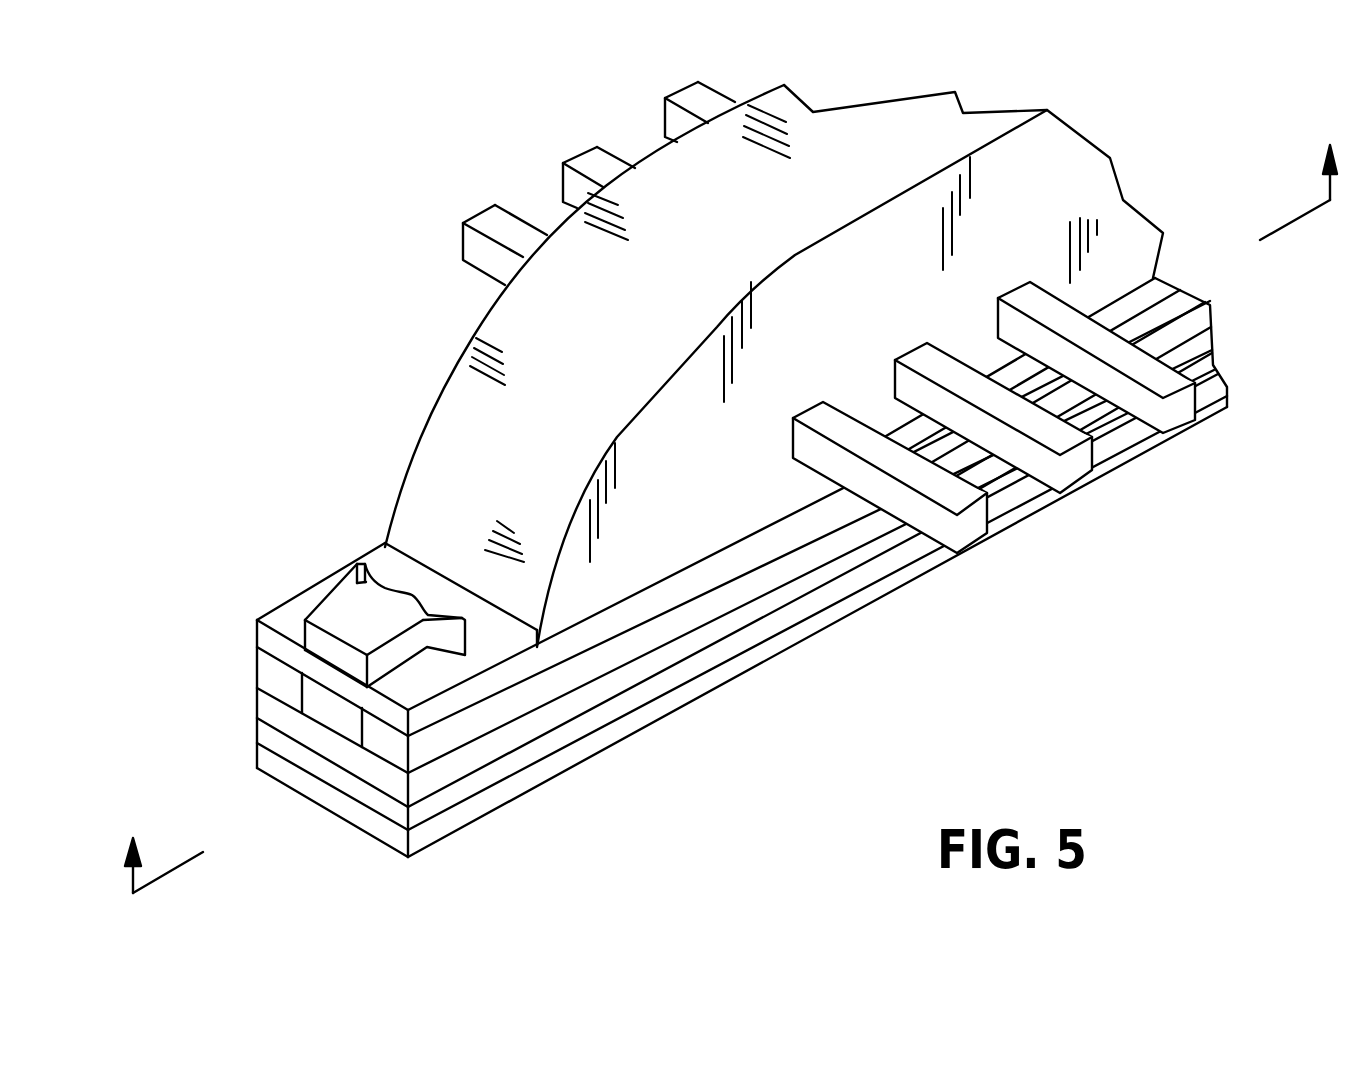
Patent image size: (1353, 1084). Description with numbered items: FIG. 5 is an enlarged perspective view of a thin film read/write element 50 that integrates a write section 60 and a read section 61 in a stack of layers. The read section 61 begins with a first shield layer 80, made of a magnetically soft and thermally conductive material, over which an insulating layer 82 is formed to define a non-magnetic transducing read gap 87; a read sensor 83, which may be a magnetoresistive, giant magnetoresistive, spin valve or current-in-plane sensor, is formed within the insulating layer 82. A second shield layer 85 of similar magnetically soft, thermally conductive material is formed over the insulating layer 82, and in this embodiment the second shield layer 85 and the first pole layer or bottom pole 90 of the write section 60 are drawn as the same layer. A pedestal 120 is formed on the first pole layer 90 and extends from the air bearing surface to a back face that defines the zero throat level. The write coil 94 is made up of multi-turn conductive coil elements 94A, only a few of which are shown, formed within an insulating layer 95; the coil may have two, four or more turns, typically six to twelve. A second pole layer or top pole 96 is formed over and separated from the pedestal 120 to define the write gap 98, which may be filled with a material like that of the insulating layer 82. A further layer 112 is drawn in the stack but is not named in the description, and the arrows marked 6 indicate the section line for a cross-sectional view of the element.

The read/write element 50 is at (721, 467).
The write section 60 is at (205, 650).
The read section 61 is at (205, 743).
The first shield layer 80 is at (682, 584).
The insulating layer 82 is at (742, 633).
The read gap 87 is at (485, 775).
The read sensor 83 is at (345, 783).
The second shield layer 85 is at (737, 595).
The first pole layer 90 is at (515, 733).
The write coil 94 is at (1028, 240).
The coil elements 94A is at (1183, 418).
The insulating layer 95 is at (912, 314).
The second pole layer 96 is at (334, 584).
The write gap 98 is at (278, 642).
The channel layer 112 is at (678, 571).
The pedestal 120 is at (300, 718).
The section line for FIG. 6 is at (730, 498).